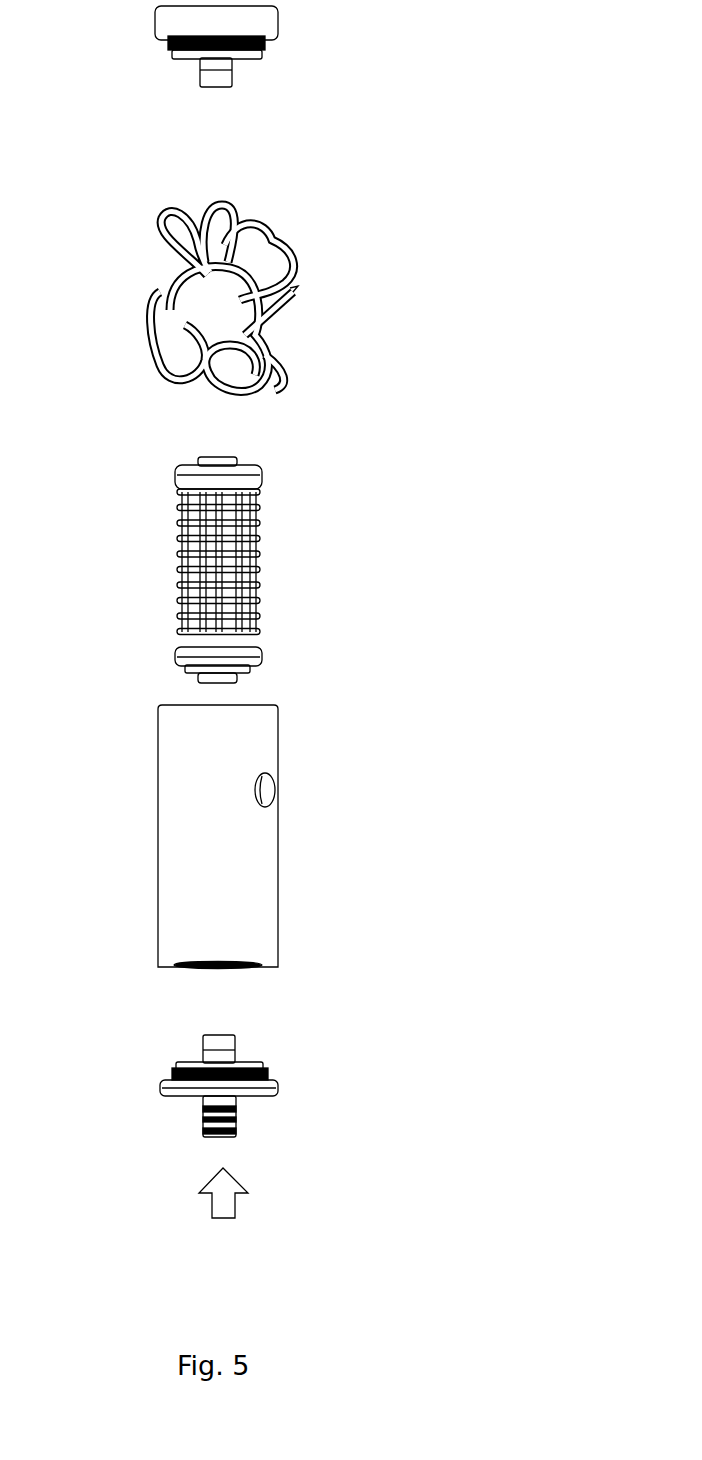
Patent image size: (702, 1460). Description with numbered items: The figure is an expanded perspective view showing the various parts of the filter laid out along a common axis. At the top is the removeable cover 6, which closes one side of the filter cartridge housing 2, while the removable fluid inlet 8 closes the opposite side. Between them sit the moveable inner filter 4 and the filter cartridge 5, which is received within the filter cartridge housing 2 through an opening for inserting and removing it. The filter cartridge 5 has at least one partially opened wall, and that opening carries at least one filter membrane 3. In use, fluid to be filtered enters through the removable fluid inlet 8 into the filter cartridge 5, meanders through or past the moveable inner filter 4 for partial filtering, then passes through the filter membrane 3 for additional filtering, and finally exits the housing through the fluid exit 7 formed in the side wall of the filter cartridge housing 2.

The filter cartridge housing 2 is at (192, 839).
The filter membrane 3 is at (177, 530).
The moveable inner filter 4 is at (195, 325).
The filter cartridge 5 is at (177, 567).
The removeable cover 6 is at (187, 23).
The fluid exit 7 is at (267, 790).
The removable fluid inlet 8 is at (162, 1083).